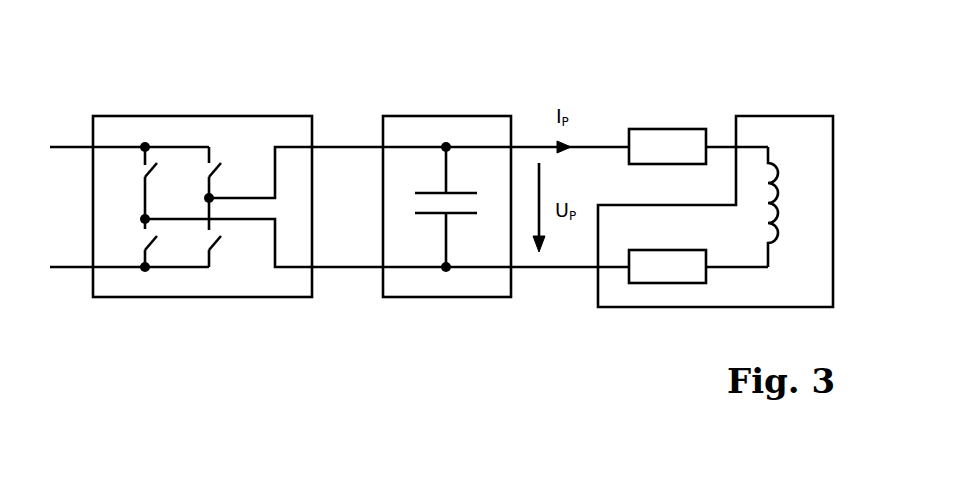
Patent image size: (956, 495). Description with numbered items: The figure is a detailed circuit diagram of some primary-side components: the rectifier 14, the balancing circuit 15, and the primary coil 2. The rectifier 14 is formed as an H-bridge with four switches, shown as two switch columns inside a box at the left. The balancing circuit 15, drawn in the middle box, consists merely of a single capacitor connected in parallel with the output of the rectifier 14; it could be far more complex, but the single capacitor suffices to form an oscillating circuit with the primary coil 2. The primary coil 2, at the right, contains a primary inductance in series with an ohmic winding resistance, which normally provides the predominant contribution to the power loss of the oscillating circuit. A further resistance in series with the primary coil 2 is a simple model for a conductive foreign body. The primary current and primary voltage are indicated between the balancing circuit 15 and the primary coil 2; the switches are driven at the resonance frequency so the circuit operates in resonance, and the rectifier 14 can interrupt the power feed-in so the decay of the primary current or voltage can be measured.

The rectifier 14 is at (197, 116).
The balancing circuit 15 is at (445, 116).
The primary coil 2 is at (775, 116).